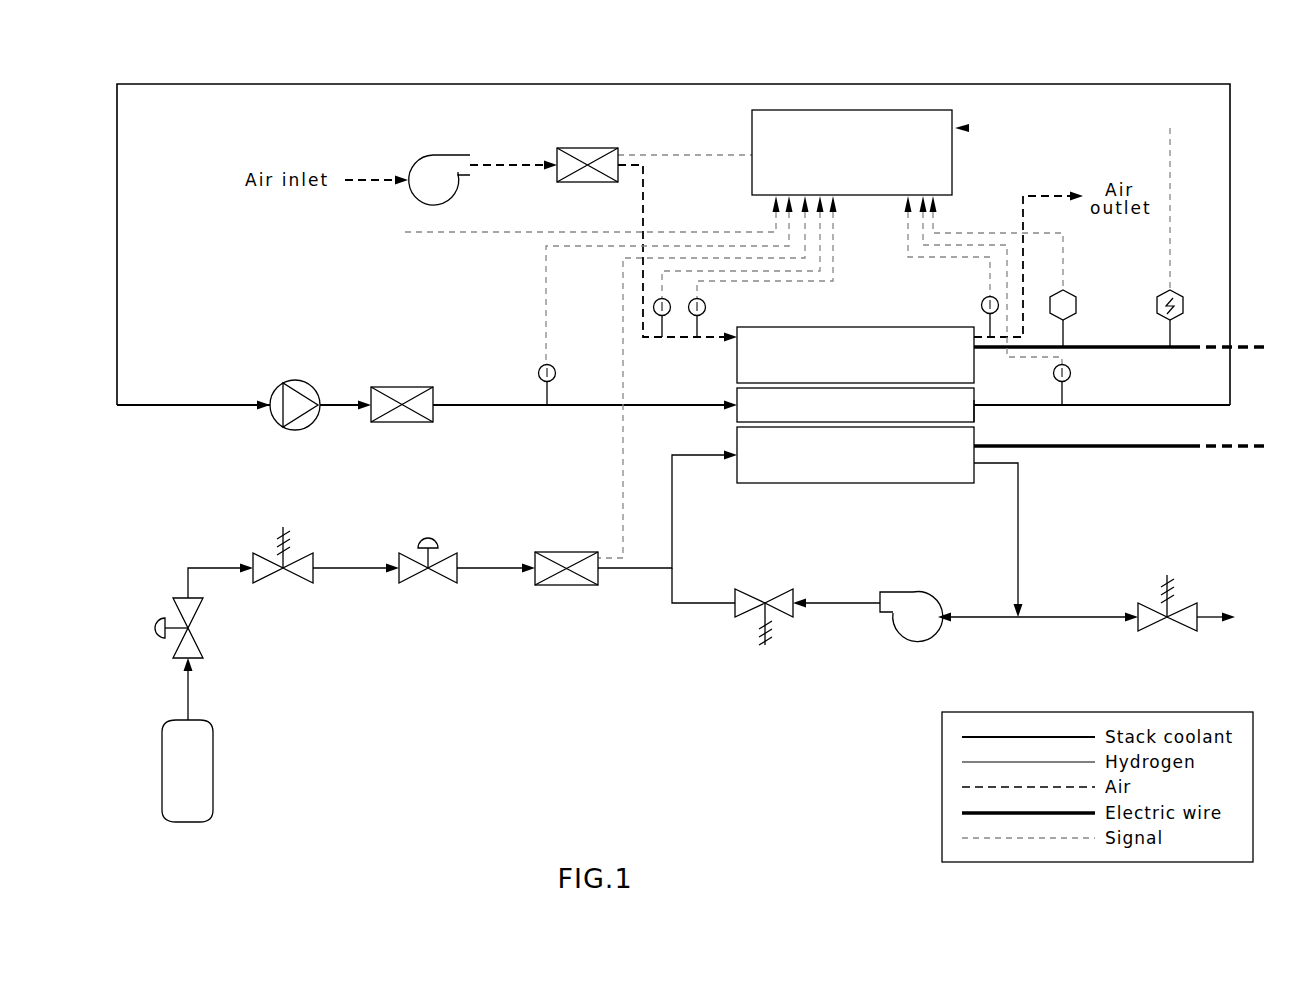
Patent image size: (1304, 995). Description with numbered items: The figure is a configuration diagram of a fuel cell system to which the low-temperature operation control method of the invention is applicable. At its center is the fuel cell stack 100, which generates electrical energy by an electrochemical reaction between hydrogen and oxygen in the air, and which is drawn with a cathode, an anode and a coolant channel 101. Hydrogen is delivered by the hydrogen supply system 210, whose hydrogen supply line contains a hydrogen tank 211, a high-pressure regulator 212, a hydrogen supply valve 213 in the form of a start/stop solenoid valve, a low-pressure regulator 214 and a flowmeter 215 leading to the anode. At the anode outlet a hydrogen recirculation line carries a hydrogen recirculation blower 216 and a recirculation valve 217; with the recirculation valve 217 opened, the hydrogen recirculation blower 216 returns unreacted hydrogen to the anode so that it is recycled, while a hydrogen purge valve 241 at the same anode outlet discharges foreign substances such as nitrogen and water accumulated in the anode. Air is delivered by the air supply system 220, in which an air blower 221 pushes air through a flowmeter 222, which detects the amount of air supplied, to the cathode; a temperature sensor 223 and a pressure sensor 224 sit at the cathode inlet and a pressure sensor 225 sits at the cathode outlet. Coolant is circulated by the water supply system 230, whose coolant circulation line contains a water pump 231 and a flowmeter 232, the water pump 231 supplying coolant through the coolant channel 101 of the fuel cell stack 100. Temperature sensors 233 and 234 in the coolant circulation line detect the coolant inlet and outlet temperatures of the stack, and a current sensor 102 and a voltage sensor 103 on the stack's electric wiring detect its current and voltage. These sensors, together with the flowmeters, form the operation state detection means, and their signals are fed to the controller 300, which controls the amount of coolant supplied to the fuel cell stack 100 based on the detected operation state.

The fuel cell stack 100 is at (929, 485).
The coolant channel 101 is at (976, 413).
The current sensor 102 is at (1071, 296).
The voltage sensor 103 is at (1181, 296).
The hydrogen supply system 210 is at (589, 603).
The hydrogen tank 211 is at (213, 773).
The high-pressure regulator 212 is at (175, 656).
The hydrogen supply valve 213 is at (310, 583).
The low-pressure regulator 214 is at (434, 583).
The flowmeter 215 is at (545, 586).
The hydrogen recirculation blower 216 is at (898, 640).
The recirculation valve 217 is at (737, 617).
The air supply system 220 is at (564, 133).
The air blower 221 is at (445, 155).
The flowmeter 222 is at (592, 148).
The temperature sensor 223 is at (654, 304).
The pressure sensor 224 is at (698, 298).
The pressure sensor 225 is at (982, 305).
The water supply system 230 is at (265, 422).
The water pump 231 is at (291, 432).
The flowmeter 232 is at (401, 423).
The temperature sensor 233 is at (539, 369).
The temperature sensor 234 is at (1071, 371).
The hydrogen purge valve 241 is at (1194, 603).
The controller 300 is at (858, 110).